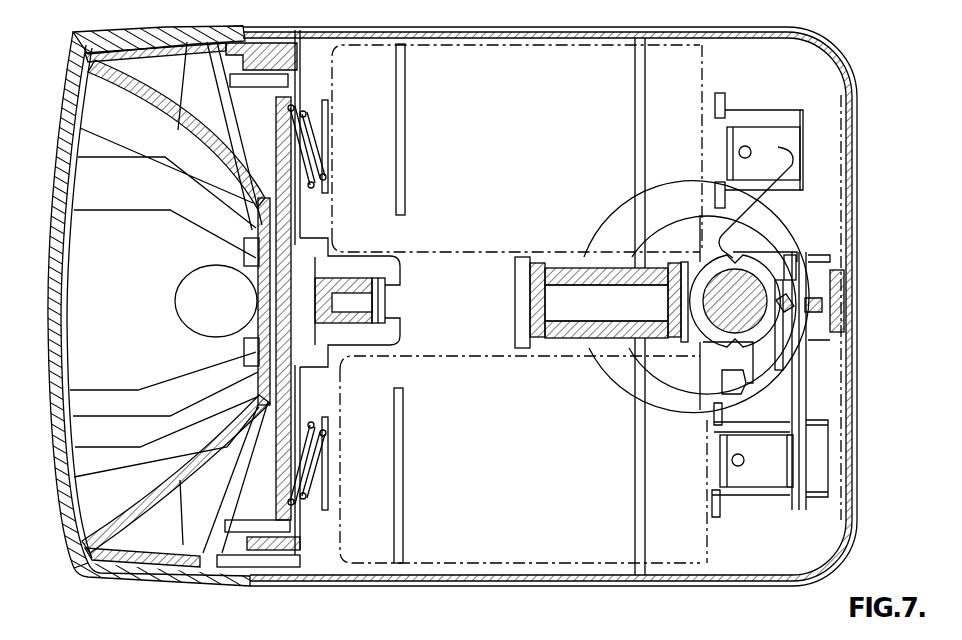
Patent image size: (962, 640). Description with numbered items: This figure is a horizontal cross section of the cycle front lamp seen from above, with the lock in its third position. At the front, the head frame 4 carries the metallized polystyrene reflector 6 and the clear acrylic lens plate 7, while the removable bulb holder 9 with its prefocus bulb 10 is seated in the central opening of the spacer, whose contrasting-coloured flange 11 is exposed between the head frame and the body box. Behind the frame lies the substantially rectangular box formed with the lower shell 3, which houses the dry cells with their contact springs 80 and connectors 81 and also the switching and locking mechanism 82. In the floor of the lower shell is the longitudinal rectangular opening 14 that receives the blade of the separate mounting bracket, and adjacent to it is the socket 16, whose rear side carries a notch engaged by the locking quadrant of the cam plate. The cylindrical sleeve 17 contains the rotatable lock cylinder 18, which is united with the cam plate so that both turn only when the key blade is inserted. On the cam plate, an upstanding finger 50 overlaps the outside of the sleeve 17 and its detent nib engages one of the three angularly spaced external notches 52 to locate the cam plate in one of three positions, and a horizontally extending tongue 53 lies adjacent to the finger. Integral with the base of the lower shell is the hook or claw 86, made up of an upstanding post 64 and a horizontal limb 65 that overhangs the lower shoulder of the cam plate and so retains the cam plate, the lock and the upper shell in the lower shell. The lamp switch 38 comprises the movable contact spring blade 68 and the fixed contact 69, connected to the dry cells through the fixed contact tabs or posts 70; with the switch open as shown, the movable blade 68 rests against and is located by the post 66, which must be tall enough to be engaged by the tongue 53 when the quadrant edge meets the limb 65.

The lower shell 3 is at (560, 575).
The head frame 4 is at (196, 577).
The reflector 6 is at (147, 505).
The lens plate 7 is at (112, 578).
The bulb holder 9 is at (393, 331).
The prefocus bulb 10 is at (190, 320).
The flange 11 is at (223, 574).
The rectangular opening 14 is at (578, 312).
The socket 16 is at (560, 268).
The sleeve 17 is at (763, 330).
The lock cylinder 18 is at (845, 310).
The lamp switch 38 is at (818, 136).
The finger 50 is at (796, 308).
The external notches 52 is at (710, 238).
The tongue 53 is at (785, 364).
The upstanding post 64 is at (740, 395).
The horizontal limb 65 is at (722, 380).
The post 66 is at (805, 254).
The contact spring blade 68 is at (822, 222).
The fixed contact 69 is at (802, 155).
The contact tabs or posts 70 is at (762, 137).
The contact springs 80 is at (308, 105).
The connectors 81 is at (388, 308).
The switching and locking mechanism 82 is at (862, 203).
The hook or claw 86 is at (737, 400).